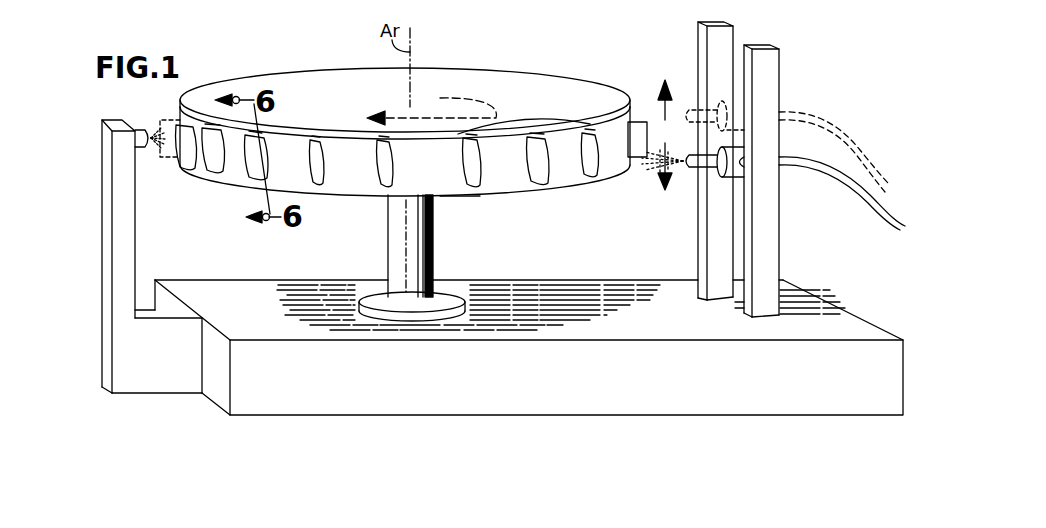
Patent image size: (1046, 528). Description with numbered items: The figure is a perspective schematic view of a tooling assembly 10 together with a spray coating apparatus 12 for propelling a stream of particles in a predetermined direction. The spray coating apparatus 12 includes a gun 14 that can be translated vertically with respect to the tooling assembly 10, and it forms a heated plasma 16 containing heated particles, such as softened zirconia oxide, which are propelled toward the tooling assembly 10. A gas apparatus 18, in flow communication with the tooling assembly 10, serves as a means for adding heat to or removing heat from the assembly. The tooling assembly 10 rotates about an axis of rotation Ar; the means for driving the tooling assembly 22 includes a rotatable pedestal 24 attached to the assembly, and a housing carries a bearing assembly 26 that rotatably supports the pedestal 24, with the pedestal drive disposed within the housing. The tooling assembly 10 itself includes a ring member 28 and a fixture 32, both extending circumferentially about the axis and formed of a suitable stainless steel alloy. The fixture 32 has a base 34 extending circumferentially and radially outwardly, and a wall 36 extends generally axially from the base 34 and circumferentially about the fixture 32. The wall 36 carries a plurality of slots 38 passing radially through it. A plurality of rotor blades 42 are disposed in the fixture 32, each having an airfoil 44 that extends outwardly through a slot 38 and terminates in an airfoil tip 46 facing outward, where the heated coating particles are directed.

The tooling assembly 10 is at (507, 381).
The spray coating apparatus 12 is at (781, 196).
The gun 14 is at (733, 178).
The heated plasma 16 is at (655, 170).
The gas apparatus 18 is at (103, 190).
The means for driving the tooling assembly 22 is at (460, 229).
The rotatable pedestal 24 is at (395, 207).
The bearing assembly 26 is at (440, 297).
The ring member 28 is at (593, 111).
The fixture 32 is at (573, 196).
The base 34 is at (460, 197).
The wall 36 is at (515, 181).
The slots 38 is at (497, 126).
The rotor blades 42 is at (208, 112).
The airfoil 44 is at (218, 155).
The airfoil tip 46 is at (199, 165).